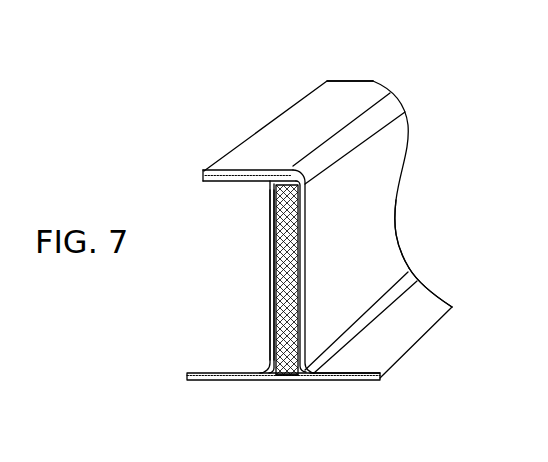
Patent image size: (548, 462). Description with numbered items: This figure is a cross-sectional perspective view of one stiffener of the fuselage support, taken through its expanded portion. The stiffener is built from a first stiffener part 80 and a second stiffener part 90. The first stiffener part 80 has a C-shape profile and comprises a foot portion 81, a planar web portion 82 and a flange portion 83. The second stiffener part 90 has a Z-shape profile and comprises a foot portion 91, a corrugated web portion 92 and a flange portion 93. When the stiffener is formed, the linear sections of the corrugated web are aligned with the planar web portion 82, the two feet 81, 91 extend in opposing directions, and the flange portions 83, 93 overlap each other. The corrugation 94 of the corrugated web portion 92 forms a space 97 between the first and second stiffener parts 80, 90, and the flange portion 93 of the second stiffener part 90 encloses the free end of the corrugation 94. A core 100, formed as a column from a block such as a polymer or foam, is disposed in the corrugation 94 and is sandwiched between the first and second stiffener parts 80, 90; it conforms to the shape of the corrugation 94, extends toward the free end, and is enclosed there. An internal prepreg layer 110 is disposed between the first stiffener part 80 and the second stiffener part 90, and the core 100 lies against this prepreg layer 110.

The first stiffener part 80 is at (268, 225).
The foot portion 81 is at (233, 373).
The planar web portion 82 is at (268, 258).
The flange portion 83 is at (227, 181).
The second stiffener part 90 is at (387, 167).
The foot portion 91 is at (343, 378).
The corrugated web portion 92 is at (380, 237).
The flange portion 93 is at (352, 93).
The corrugation 94 is at (385, 250).
The space 97 is at (282, 378).
The core 100 is at (286, 302).
The internal prepreg layer 110 is at (268, 292).